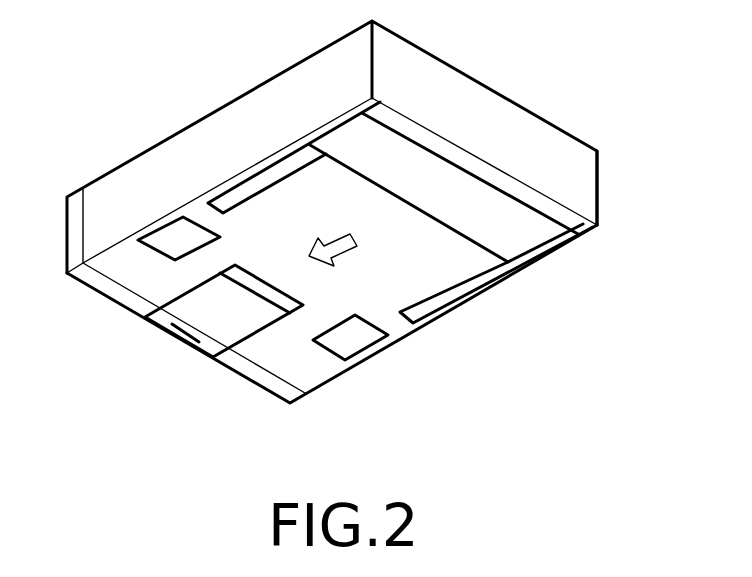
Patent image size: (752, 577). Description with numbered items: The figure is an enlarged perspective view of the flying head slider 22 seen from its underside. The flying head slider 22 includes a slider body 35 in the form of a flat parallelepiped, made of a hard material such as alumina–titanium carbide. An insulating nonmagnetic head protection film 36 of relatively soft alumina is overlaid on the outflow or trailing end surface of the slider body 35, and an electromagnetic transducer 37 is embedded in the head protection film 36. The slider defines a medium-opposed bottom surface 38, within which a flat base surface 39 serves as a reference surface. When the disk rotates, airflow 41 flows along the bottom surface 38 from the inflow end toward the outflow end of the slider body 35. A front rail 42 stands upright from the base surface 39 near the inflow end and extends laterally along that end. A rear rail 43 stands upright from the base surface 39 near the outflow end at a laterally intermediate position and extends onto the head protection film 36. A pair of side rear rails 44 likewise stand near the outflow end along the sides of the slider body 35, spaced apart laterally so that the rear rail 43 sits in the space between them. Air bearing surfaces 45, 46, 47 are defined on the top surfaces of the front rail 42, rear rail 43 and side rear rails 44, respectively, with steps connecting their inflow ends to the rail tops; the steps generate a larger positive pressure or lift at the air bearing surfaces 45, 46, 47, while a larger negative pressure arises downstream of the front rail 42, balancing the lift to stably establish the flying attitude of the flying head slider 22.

The flying head slider 22 is at (209, 106).
The slider body 35 is at (337, 378).
The head protection film 36 is at (293, 403).
The electromagnetic transducer 37 is at (178, 334).
The bottom surface 38 is at (463, 264).
The base surface 39 is at (290, 248).
The airflow 41 is at (336, 240).
The front rail 42 is at (563, 207).
The rear rail 43 is at (218, 321).
The side rear rails 44 is at (262, 278).
The air bearing surface 45 is at (441, 219).
The air bearing surface 46 is at (180, 307).
The air bearing surface 47 is at (167, 235).